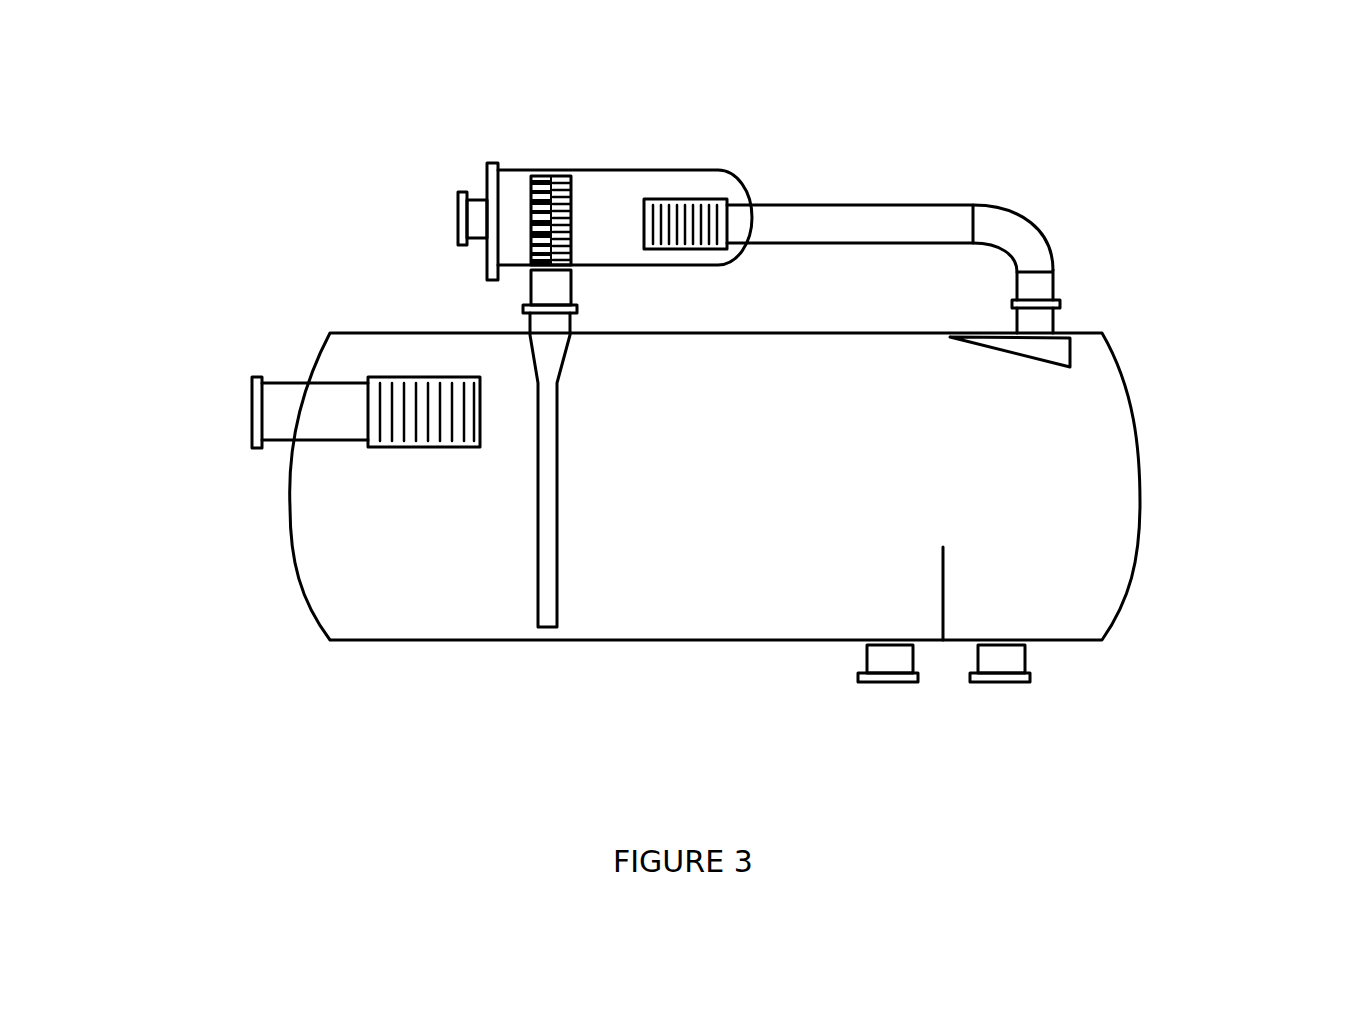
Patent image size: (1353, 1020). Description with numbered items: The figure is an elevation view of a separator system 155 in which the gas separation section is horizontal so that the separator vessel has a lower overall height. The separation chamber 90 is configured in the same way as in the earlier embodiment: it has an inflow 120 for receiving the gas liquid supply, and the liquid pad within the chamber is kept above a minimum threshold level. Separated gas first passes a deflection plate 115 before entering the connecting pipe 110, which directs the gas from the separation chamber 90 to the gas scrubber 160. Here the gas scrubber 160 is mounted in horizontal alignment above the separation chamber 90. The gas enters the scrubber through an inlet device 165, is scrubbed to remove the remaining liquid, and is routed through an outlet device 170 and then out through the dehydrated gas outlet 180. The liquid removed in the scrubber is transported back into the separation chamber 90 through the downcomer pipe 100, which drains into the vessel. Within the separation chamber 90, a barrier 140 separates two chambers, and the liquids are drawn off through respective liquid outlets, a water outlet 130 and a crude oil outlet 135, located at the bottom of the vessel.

The separation chamber 90 is at (1137, 430).
The downcomer pipe 100 is at (583, 640).
The connecting pipe 110 is at (860, 207).
The deflection plate 115 is at (1073, 360).
The inflow 120 is at (252, 428).
The liquid outlet for water 130 is at (870, 683).
The liquid outlet for crude oil 135 is at (1017, 685).
The barrier 140 is at (948, 597).
The separator assembly 155 is at (1192, 185).
The gas scrubber 160 is at (632, 168).
The inlet device 165 is at (707, 207).
The outlet device 170 is at (575, 190).
The dehydrated gas outlet 180 is at (458, 213).